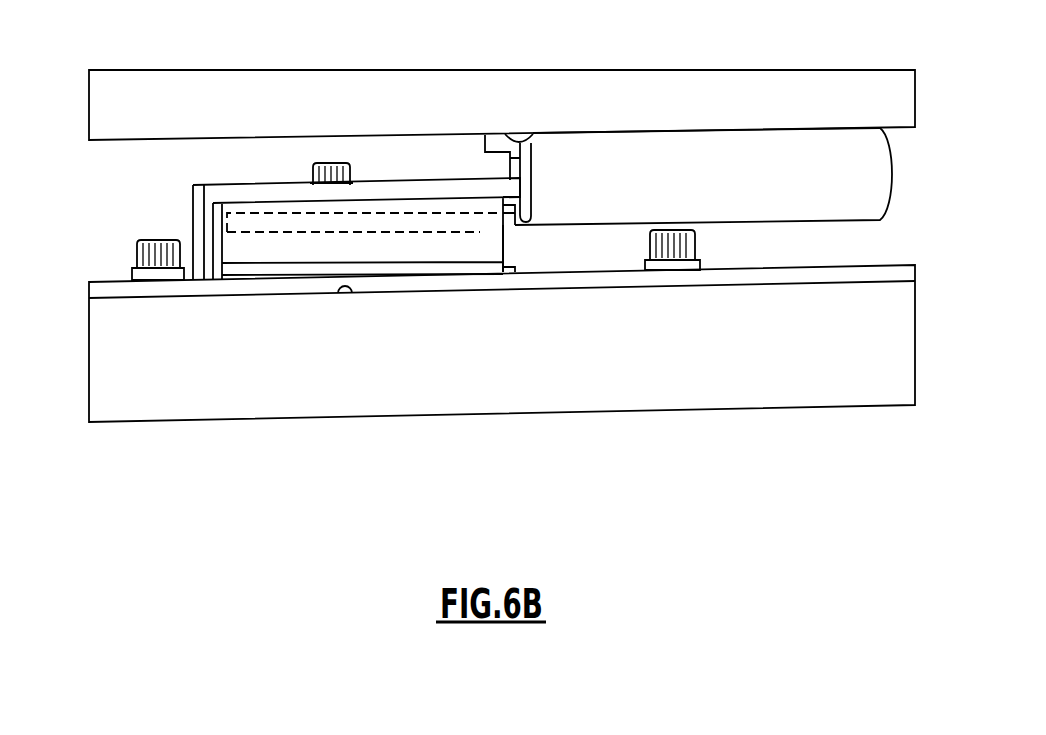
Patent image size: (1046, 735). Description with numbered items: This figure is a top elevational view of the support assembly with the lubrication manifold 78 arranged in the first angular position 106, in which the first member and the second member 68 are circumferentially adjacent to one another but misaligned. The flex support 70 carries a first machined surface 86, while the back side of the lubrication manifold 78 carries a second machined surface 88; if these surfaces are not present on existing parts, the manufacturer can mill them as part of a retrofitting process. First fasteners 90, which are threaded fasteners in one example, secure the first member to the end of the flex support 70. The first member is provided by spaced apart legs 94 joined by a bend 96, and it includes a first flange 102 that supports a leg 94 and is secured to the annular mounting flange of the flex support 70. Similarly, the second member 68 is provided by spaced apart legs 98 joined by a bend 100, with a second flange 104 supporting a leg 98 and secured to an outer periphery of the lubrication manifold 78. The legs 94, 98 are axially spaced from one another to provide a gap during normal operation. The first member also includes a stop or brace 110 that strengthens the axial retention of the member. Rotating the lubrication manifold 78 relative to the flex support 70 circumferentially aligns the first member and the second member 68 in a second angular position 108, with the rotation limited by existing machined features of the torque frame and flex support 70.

The second member 68 is at (751, 137).
The flex support 70 is at (166, 402).
The lubrication manifold 78 is at (527, 86).
The first machined surface 86 is at (352, 293).
The second machined surface 88 is at (533, 143).
The first fasteners 90 is at (675, 265).
The legs 94 is at (378, 188).
The bend 96 is at (247, 252).
The legs 98 is at (510, 213).
The bend 100 is at (608, 185).
The first flange 102 is at (545, 282).
The second flange 104 is at (485, 147).
The first angular position 106 is at (694, 126).
The second angular position 108 is at (287, 199).
The stop or brace 110 is at (210, 233).